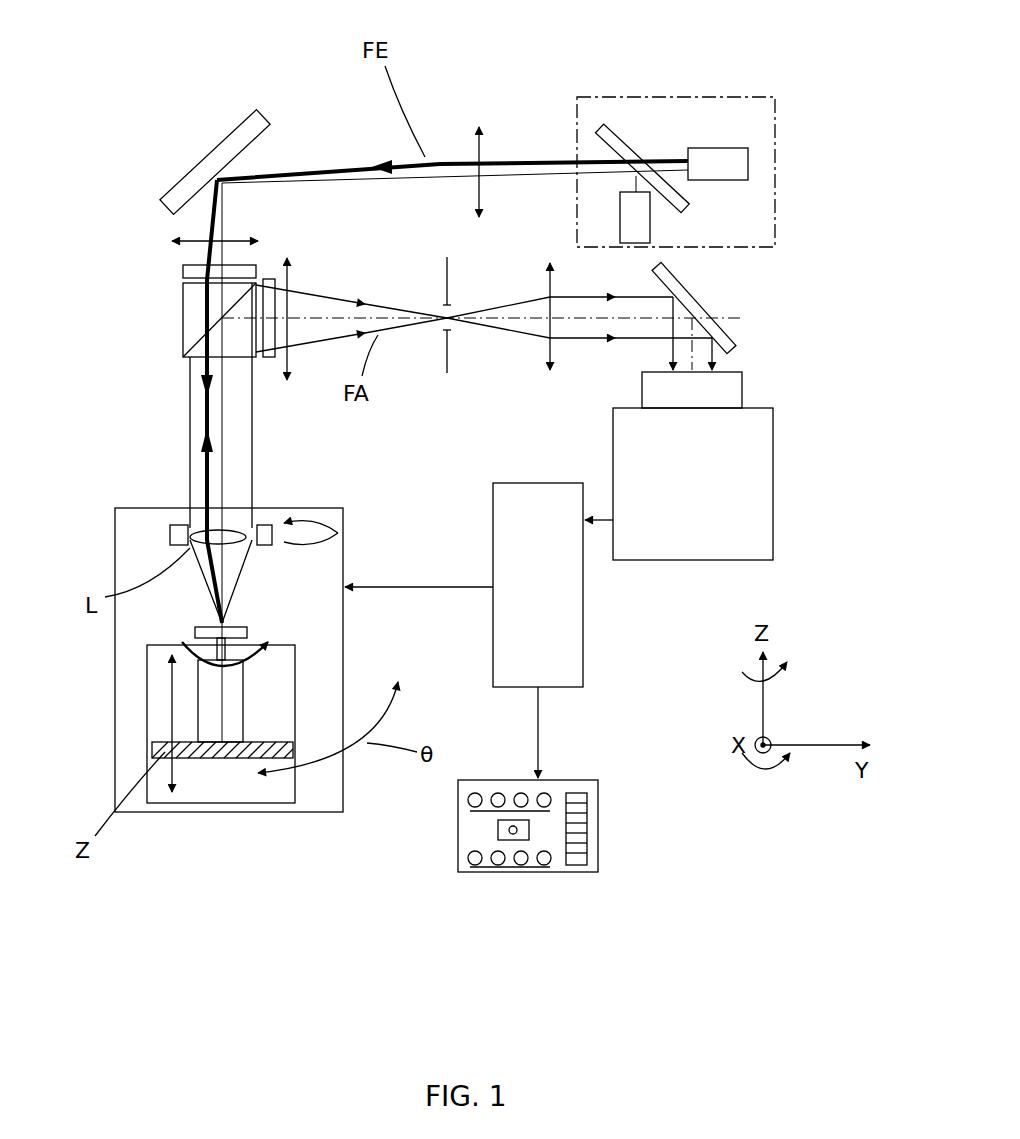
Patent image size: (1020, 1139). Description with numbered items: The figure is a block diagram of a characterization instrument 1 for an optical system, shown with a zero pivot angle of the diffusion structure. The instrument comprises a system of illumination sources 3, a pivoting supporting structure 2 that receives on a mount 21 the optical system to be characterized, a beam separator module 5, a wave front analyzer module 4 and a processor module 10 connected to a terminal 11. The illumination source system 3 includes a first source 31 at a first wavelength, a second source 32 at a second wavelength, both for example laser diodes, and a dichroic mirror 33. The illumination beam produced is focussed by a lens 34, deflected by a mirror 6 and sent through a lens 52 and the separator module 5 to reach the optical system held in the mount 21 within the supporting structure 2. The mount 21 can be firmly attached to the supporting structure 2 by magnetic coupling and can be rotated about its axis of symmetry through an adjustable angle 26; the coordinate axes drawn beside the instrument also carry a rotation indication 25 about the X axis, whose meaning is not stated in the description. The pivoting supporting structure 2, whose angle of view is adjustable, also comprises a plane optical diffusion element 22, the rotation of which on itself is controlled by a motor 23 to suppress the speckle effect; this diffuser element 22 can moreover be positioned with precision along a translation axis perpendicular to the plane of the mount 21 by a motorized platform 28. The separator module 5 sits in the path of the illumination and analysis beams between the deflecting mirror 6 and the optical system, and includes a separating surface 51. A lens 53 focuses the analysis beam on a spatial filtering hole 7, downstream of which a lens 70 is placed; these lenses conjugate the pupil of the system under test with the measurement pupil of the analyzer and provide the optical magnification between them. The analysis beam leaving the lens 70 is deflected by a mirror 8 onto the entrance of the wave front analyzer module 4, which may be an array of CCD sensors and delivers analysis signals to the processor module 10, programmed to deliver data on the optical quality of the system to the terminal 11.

The characterization instrument 1 is at (585, 628).
The pivoting supporting structure 2 is at (350, 628).
The system of illumination sources 3 is at (732, 95).
The wave front analyzer module 4 is at (776, 496).
The beam separator module 5 is at (172, 312).
The mirror 6 is at (220, 143).
The spatial filtering hole 7 is at (445, 350).
The mirror 8 is at (728, 325).
The processor module 10 is at (565, 688).
The terminal 11 is at (600, 845).
The mount 21 is at (180, 530).
The plane optical diffusion element 22 is at (243, 627).
The motor 23 is at (213, 738).
The rotation about X axis 25 is at (760, 770).
The adjustable angle 26 is at (340, 535).
The motorized platform 28 is at (235, 757).
The first source 31 is at (650, 215).
The second source 32 is at (745, 148).
The dichroic mirror 33 is at (623, 133).
The lens 34 is at (482, 155).
The separating surface 51 is at (195, 340).
The lens 52 is at (227, 240).
The lens 53 is at (297, 277).
The lens 70 is at (545, 345).